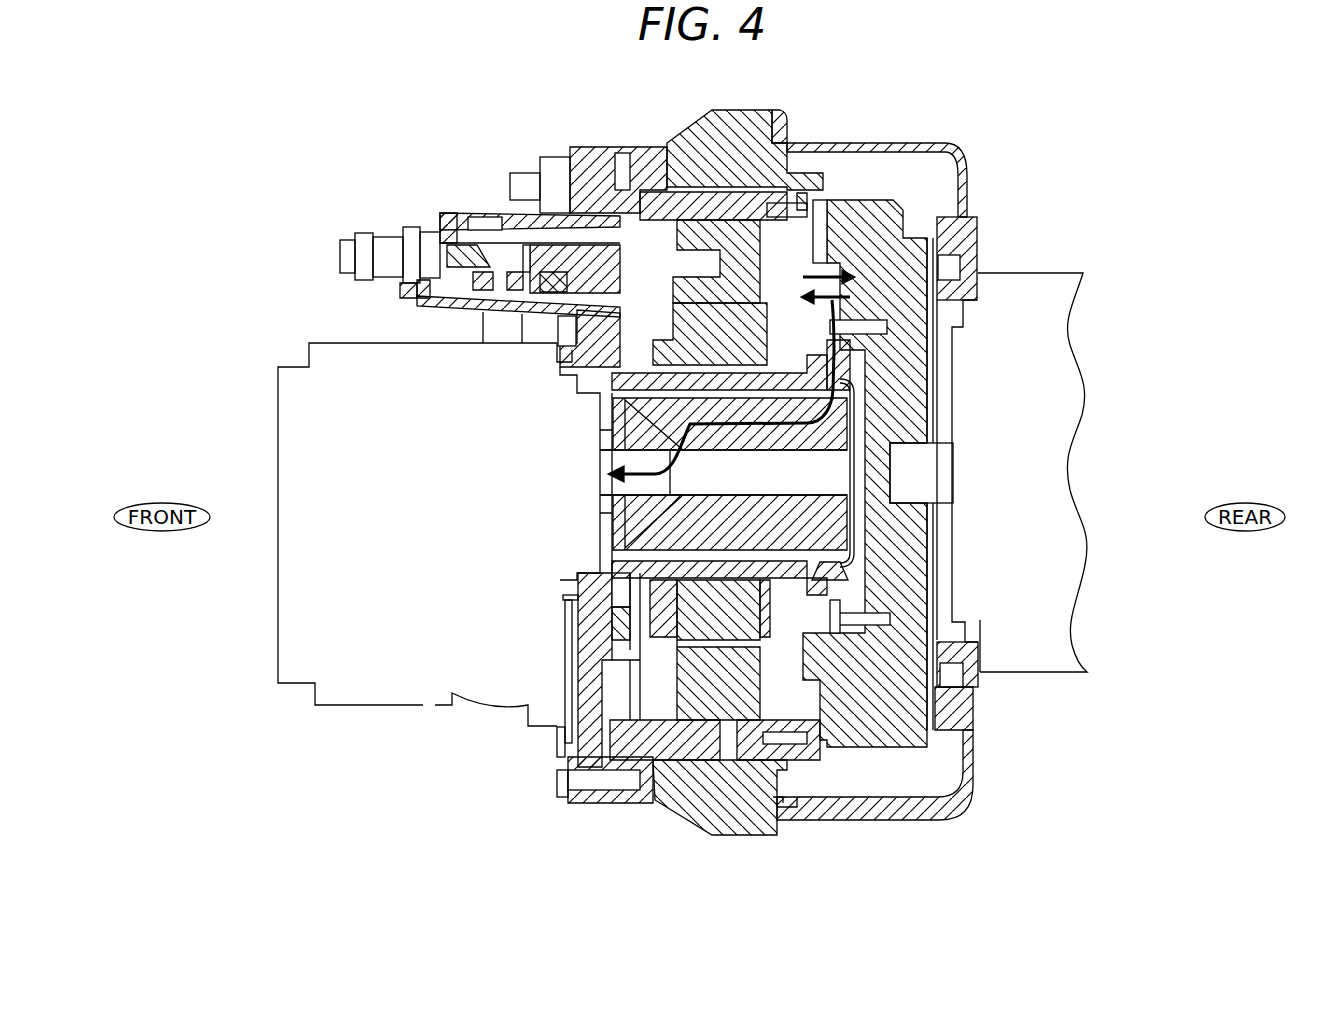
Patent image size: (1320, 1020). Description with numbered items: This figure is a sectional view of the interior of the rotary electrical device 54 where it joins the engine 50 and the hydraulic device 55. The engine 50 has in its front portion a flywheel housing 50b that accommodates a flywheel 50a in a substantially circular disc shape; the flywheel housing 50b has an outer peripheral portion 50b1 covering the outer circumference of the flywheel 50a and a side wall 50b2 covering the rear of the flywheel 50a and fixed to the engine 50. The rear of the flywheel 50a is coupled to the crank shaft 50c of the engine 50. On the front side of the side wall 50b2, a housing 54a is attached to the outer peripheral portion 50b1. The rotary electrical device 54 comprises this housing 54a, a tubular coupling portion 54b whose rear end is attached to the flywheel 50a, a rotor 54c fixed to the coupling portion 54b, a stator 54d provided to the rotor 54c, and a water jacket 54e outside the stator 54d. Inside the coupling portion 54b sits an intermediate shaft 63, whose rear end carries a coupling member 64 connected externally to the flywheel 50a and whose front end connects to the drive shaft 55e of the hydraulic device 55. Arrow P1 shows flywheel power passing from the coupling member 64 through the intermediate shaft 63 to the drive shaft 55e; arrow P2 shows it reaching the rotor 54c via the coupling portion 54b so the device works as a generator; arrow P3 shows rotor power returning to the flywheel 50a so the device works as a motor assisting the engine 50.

The engine 50 is at (1069, 241).
The flywheel 50a is at (913, 247).
The flywheel housing 50b is at (920, 435).
The outer peripheral portion 50b1 is at (888, 143).
The side wall 50b2 is at (962, 222).
The crank shaft 50c is at (940, 465).
The rotary electrical device 54 is at (739, 104).
The housing 54a is at (702, 132).
The coupling portion 54b is at (808, 363).
The rotor 54c is at (767, 301).
The stator 54d is at (748, 243).
The water jacket 54e is at (665, 213).
The hydraulic device 55 is at (432, 660).
The drive shaft 55e is at (598, 475).
The intermediate shaft 63 is at (830, 520).
The coupling member 64 is at (860, 572).
The arrow P1 is at (607, 400).
The arrow P2 is at (963, 278).
The arrow P3 is at (826, 240).